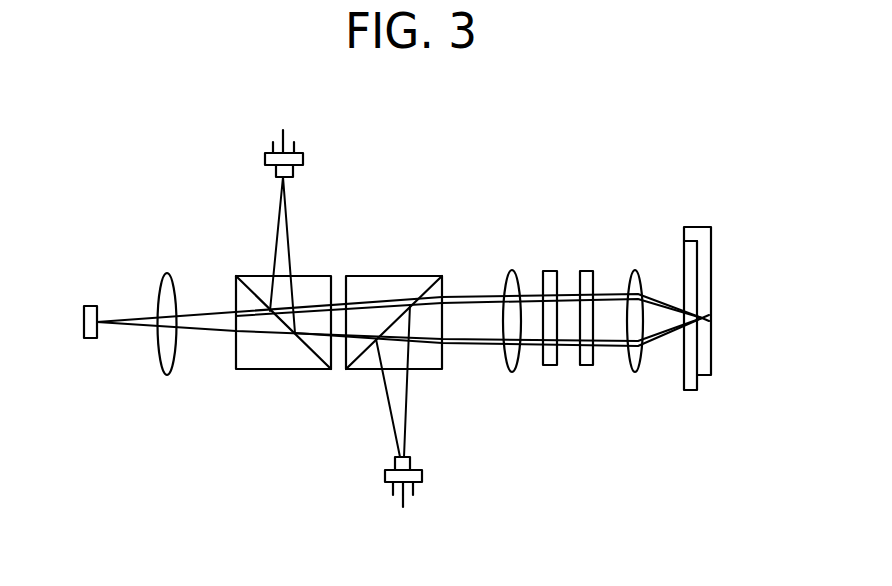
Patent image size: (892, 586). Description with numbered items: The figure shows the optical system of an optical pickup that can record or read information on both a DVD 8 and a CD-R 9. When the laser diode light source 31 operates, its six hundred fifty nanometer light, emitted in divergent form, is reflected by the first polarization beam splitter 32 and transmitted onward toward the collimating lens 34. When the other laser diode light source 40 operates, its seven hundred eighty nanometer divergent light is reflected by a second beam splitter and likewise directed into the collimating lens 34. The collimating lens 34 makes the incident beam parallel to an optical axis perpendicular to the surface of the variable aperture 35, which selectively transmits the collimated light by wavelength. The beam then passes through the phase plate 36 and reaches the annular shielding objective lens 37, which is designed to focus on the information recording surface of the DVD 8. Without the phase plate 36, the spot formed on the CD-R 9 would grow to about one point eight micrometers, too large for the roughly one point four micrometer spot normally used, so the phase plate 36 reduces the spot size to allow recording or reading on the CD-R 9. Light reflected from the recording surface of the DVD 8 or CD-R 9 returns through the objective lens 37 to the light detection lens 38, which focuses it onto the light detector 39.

The DVD 8 is at (697, 382).
The CD-R 9 is at (711, 250).
The laser diode light source 31 is at (303, 156).
The first polarization beam splitter 32 is at (264, 372).
The collimating lens 34 is at (405, 274).
The variable aperture 35 is at (552, 271).
The phase plate 36 is at (588, 271).
The annular shielding objective lens 37 is at (635, 270).
The light detection lens 38 is at (167, 273).
The light detector 39 is at (92, 306).
The laser diode light source 40 is at (385, 476).